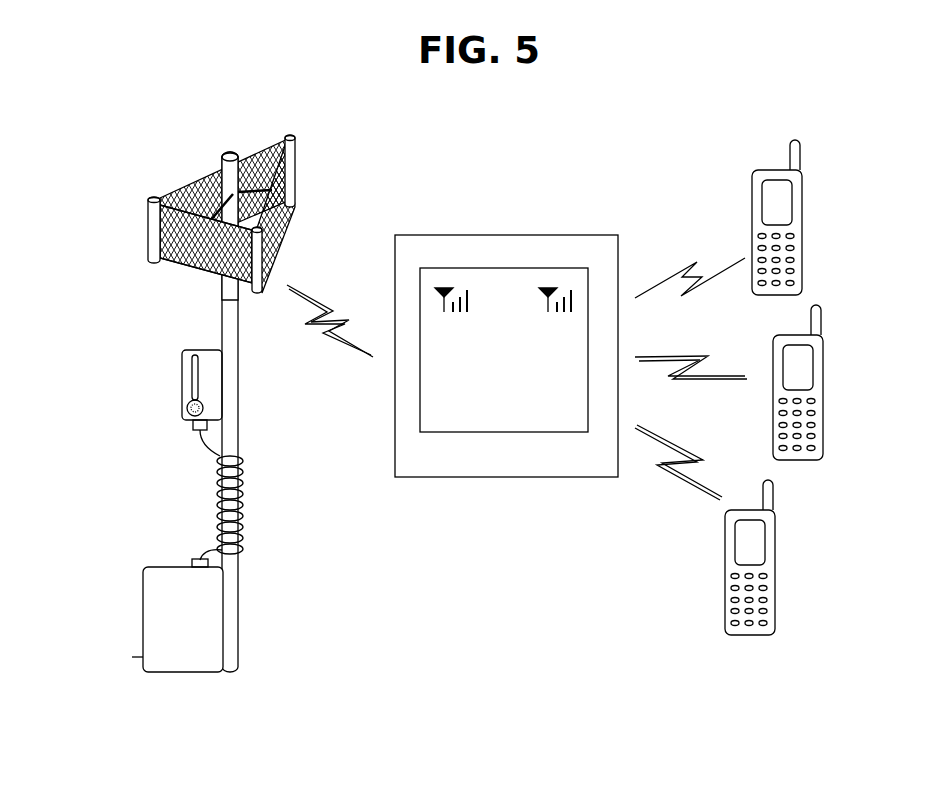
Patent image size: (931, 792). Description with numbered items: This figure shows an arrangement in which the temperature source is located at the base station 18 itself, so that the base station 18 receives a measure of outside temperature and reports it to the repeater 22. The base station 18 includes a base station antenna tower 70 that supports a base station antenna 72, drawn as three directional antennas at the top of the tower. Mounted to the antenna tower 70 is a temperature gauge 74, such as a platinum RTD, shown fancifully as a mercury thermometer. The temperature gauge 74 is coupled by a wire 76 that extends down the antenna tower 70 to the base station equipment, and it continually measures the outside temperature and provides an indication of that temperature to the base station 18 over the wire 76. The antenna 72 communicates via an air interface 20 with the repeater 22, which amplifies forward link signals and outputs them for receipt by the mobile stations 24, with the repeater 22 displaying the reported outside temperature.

The base station 18 is at (143, 588).
The air interface 20 is at (328, 310).
The wireless signal repeater 22 is at (447, 235).
The mobile stations 24 is at (752, 200).
The base station antenna tower 70 is at (238, 322).
The base station antenna 72 is at (148, 228).
The temperature gauge 74 is at (182, 380).
The wire 76 is at (243, 492).